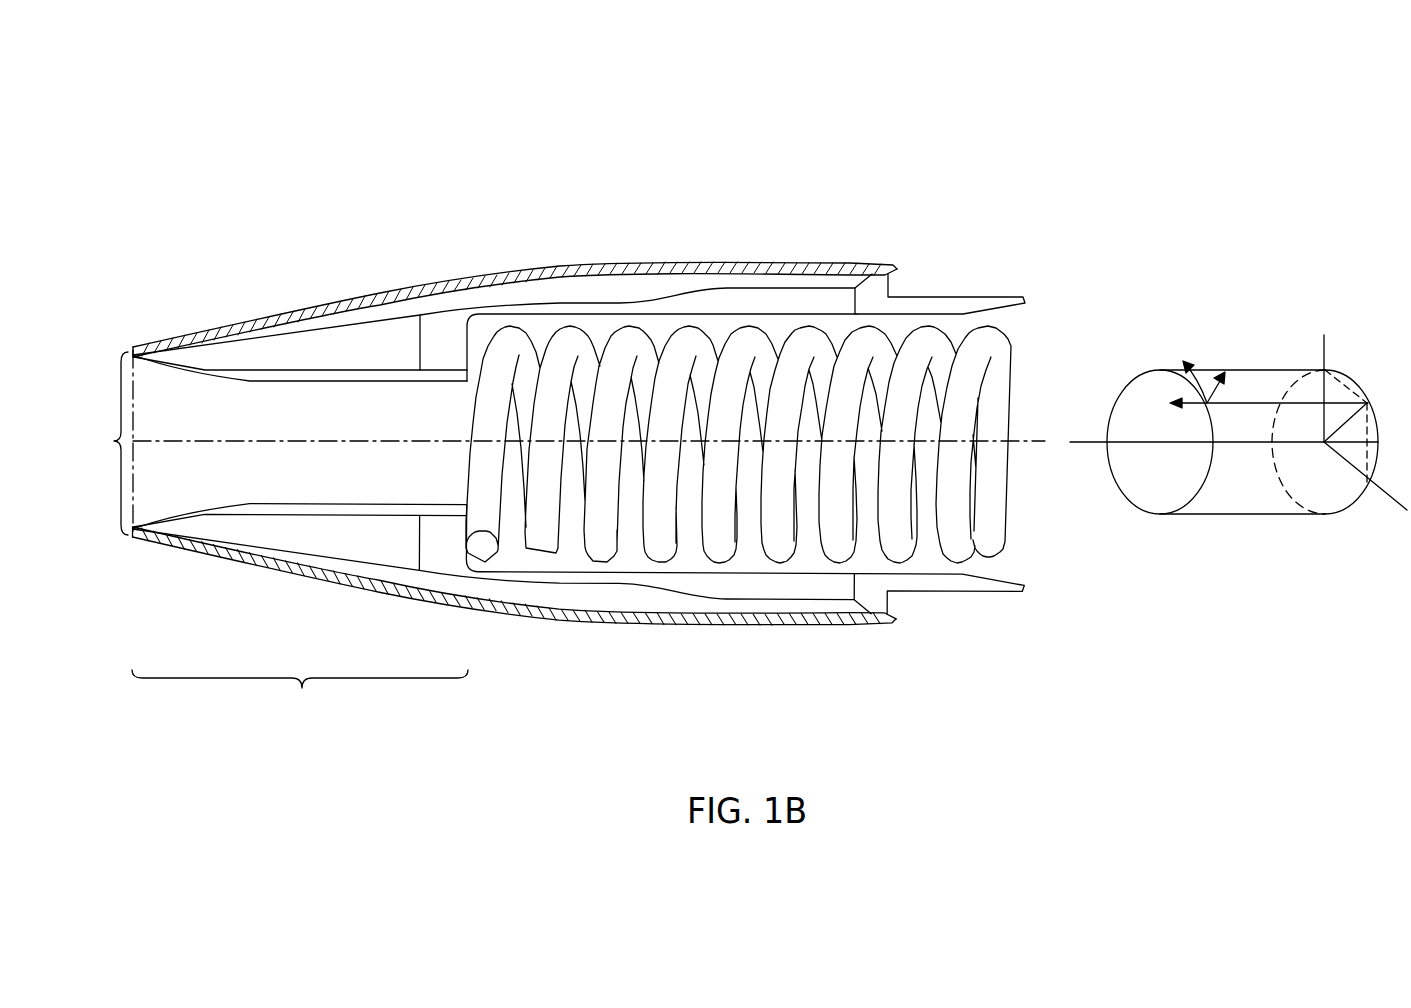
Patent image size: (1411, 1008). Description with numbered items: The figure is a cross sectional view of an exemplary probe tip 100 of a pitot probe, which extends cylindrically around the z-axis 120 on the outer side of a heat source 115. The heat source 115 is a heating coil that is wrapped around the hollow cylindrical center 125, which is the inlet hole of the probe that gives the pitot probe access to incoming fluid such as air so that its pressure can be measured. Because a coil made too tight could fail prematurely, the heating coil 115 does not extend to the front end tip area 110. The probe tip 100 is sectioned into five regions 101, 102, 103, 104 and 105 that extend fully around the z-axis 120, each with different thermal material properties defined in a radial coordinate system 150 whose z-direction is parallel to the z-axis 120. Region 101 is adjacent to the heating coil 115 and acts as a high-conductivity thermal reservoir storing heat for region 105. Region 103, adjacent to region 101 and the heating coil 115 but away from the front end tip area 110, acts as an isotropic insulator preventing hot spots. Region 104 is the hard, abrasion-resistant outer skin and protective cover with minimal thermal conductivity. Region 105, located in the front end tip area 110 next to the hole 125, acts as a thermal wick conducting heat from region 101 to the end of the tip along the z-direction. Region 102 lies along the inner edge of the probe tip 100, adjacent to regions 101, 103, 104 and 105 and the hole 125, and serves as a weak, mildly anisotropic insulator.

The probe tip 100 is at (992, 155).
The region 101 is at (768, 298).
The region 102 is at (553, 286).
The region 103 is at (870, 284).
The region 104 is at (432, 282).
The region 105 is at (238, 347).
The front end tip area 110 is at (300, 700).
The heat source 115 is at (1009, 523).
The z-axis 120 is at (1047, 432).
The hollow cylindrical center 125 is at (99, 442).
The radial coordinate system 150 is at (1258, 543).